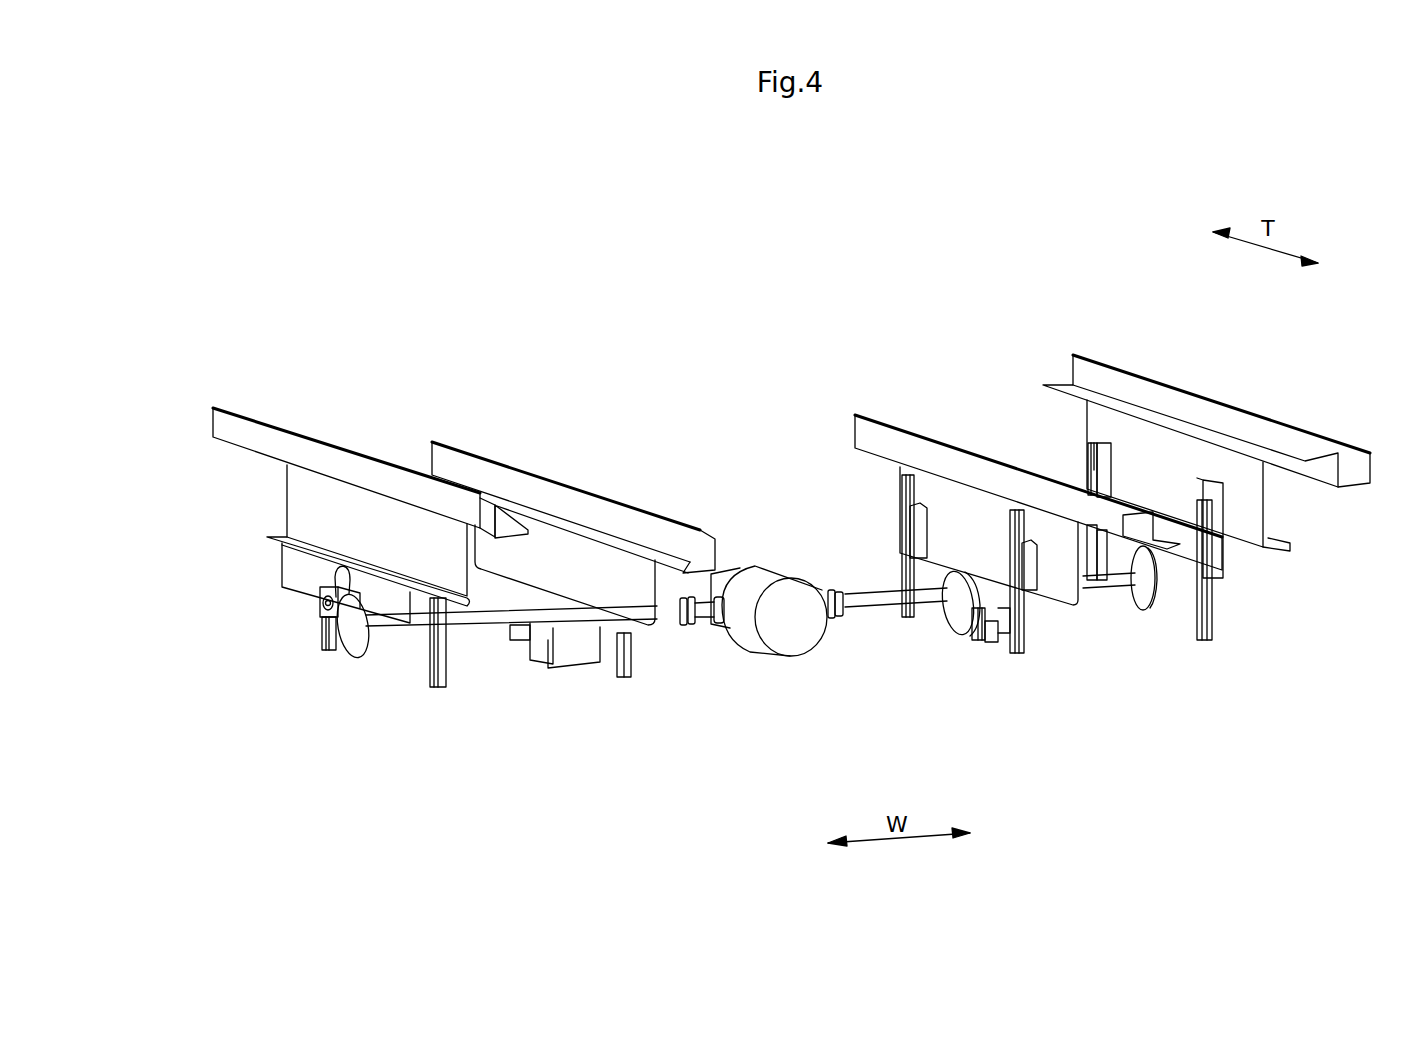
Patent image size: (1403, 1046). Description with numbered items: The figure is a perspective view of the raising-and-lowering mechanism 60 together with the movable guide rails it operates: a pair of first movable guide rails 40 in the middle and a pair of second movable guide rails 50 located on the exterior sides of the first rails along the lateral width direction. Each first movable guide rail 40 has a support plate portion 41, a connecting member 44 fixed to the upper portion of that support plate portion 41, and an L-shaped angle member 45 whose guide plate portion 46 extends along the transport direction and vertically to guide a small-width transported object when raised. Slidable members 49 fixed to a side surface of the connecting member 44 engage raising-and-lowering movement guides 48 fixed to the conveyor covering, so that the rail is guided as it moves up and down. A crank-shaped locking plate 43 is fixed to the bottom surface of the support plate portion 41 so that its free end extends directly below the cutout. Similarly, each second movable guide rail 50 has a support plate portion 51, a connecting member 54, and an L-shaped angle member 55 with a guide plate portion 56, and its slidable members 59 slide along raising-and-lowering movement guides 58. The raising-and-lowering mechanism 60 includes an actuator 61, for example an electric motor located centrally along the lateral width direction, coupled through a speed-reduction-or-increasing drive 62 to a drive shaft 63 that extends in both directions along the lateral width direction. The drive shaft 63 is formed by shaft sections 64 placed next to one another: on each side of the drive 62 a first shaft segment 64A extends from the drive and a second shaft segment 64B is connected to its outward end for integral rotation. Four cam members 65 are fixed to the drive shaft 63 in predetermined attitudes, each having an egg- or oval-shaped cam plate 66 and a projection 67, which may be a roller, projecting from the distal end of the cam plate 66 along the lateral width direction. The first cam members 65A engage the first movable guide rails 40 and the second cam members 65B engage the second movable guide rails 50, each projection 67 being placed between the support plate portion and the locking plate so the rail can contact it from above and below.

The first movable guide rail 40 is at (420, 432).
The support plate portion 41 is at (595, 660).
The locking plate 43 is at (543, 663).
The connecting member 44 is at (613, 563).
The angle member 45 is at (568, 523).
The guide plate portion 46 is at (530, 488).
The raising-and-lowering movement guide 48 is at (903, 483).
The slidable member 49 is at (918, 523).
The second movable guide rail 50 is at (200, 384).
The support plate portion 51 is at (290, 558).
The connecting member 54 is at (300, 488).
The angle member 55 is at (515, 530).
The guide plate portion 56 is at (300, 438).
The raising-and-lowering movement guide 58 is at (1210, 636).
The slidable member 59 is at (1093, 447).
The raising-and-lowering mechanism 60 is at (470, 276).
The actuator 61 is at (800, 634).
The speed-reduction-or-increasing drive 62 is at (727, 580).
The drive shaft 63 is at (862, 620).
The shaft section 64 is at (652, 706).
The first shaft segment 64A is at (712, 624).
The second shaft segment 64B is at (687, 624).
The cam member 65 is at (715, 659).
The first cam member 65A is at (527, 646).
The second cam member 65B is at (350, 664).
The cam plate 66 is at (362, 642).
The projection 67 is at (320, 603).